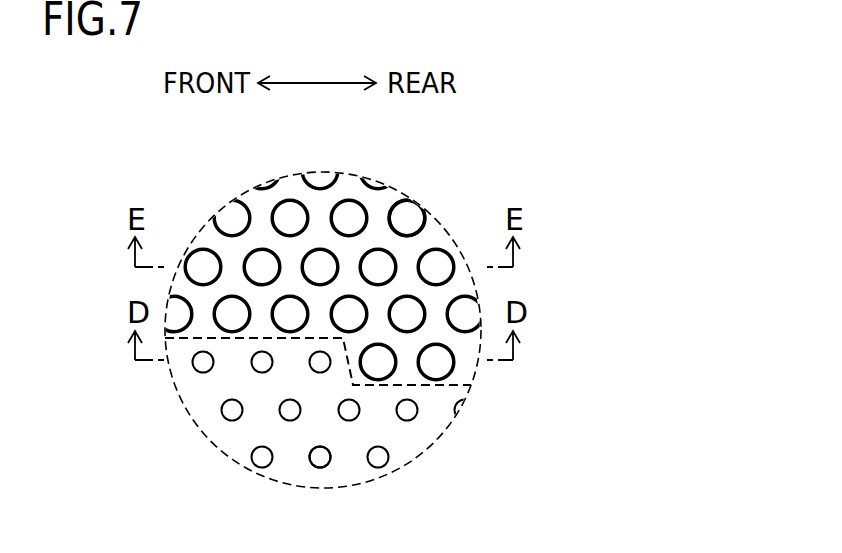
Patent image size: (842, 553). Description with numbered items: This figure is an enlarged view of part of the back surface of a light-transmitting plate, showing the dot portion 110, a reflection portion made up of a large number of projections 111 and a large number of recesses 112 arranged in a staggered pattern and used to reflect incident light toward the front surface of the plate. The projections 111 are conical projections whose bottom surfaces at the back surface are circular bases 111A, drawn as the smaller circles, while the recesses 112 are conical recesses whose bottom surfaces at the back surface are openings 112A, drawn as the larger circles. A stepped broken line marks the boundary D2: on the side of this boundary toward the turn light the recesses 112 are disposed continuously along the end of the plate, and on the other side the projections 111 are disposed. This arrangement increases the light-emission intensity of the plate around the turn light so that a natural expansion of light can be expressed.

The dot portion 110 is at (323, 330).
The recesses 112 is at (343, 208).
The openings 112A is at (373, 210).
The projections 111 is at (318, 462).
The circular bases 111A is at (308, 462).
The boundary D2 is at (432, 387).